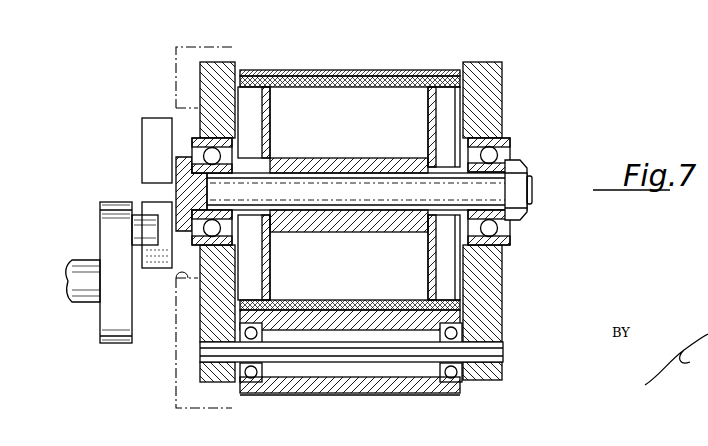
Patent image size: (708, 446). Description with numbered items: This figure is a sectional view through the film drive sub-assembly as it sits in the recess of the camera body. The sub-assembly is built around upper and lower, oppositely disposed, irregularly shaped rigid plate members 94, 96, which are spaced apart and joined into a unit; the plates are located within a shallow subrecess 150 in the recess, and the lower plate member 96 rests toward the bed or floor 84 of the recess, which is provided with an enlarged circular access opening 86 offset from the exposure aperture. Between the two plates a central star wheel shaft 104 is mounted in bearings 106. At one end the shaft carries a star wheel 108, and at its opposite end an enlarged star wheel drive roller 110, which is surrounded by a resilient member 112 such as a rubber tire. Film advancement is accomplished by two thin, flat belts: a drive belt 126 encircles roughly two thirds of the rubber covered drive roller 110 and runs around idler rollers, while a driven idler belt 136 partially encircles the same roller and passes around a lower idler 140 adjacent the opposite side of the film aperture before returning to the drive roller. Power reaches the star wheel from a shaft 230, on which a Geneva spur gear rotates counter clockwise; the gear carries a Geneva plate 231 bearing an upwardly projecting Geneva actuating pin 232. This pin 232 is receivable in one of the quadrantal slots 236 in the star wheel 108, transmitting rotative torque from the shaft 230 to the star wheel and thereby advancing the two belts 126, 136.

The bed or floor 84 is at (176, 372).
The enlarged circular access opening 86 is at (175, 278).
The upper rigid plate member 94 is at (496, 97).
The lower rigid plate member 96 is at (207, 318).
The central star wheel shaft 104 is at (519, 222).
The bearings 106 is at (194, 147).
The star wheel 108 is at (150, 118).
The star wheel drive roller 110 is at (436, 88).
The resilient member 112 is at (347, 84).
The drive belt 126 is at (313, 78).
The driven idler belt 136 is at (272, 72).
The lower idler 140 is at (462, 324).
The shallow subrecess 150 is at (213, 70).
The shaft 230 is at (85, 268).
The Geneva plate 231 is at (110, 343).
The Geneva actuating pin 232 is at (146, 217).
The quadrantal slots 236 is at (153, 153).